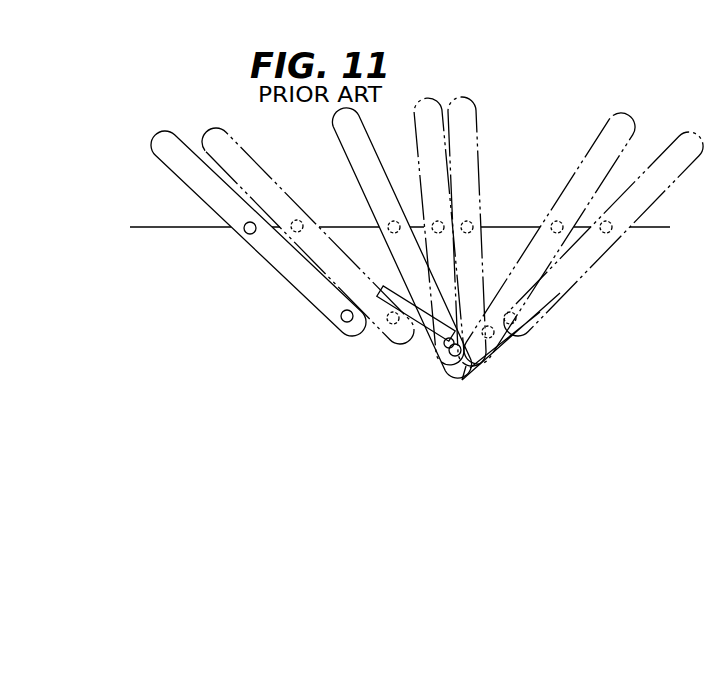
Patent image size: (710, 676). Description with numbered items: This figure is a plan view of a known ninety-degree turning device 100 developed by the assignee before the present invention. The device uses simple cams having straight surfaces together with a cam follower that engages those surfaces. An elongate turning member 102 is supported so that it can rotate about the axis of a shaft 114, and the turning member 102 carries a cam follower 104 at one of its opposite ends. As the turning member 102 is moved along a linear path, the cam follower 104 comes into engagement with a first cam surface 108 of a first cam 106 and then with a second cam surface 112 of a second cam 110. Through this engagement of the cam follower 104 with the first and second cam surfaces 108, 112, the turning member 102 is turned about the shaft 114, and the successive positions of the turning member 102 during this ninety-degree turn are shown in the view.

The turning device 100 is at (438, 52).
The turning member 102 is at (168, 156).
The cam follower 104 is at (342, 321).
The first cam 106 is at (388, 326).
The first cam surface 108 is at (410, 313).
The second cam 110 is at (528, 331).
The second cam surface 112 is at (499, 336).
The shaft 114 is at (244, 236).